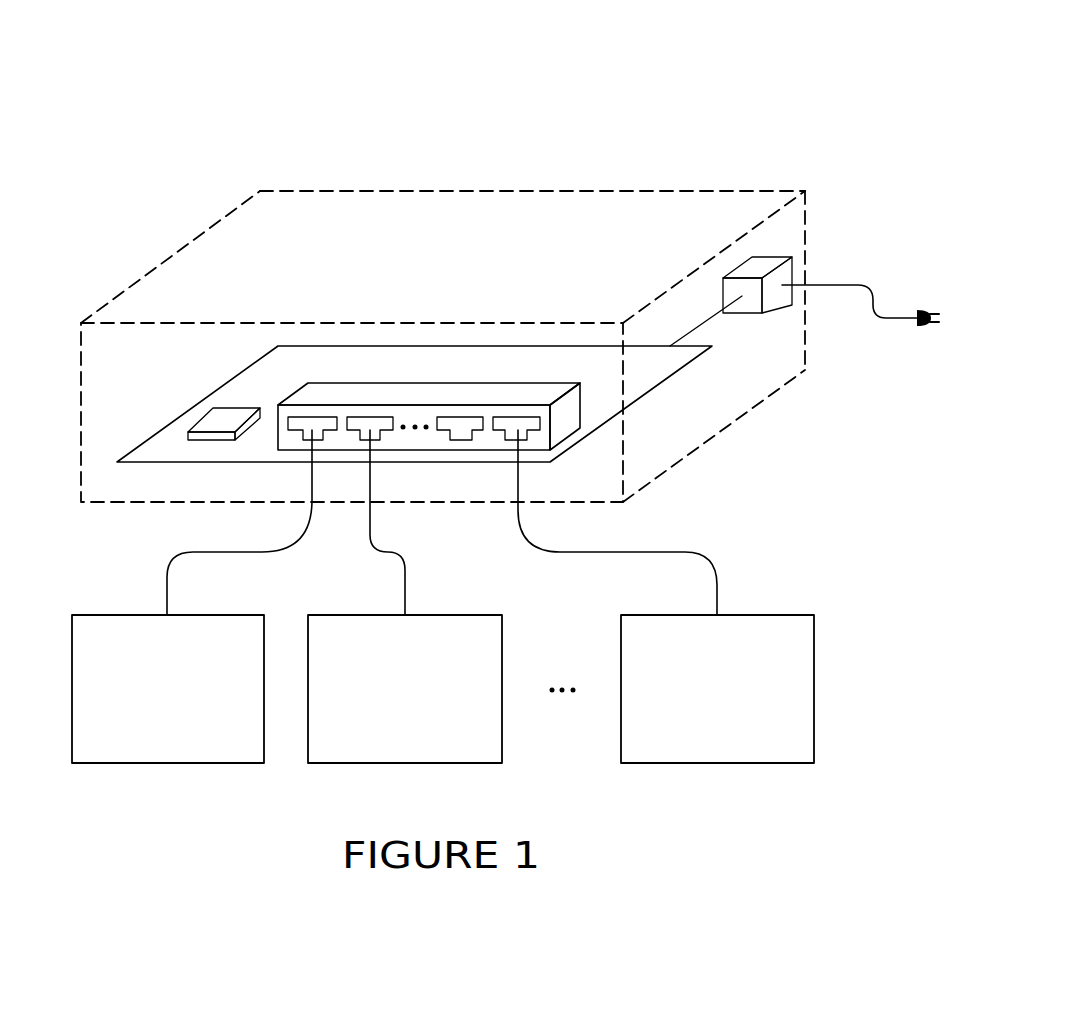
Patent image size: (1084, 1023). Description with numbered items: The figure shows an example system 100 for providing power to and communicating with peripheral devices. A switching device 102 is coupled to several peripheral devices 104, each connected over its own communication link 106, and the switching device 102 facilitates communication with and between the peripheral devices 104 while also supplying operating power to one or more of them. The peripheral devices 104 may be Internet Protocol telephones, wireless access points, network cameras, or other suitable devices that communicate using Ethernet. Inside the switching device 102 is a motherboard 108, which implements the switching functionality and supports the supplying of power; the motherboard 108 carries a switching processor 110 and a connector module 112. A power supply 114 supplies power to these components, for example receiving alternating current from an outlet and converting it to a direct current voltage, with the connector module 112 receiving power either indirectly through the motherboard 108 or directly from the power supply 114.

The system 100 is at (801, 62).
The switching device 102 is at (550, 191).
The peripheral devices 104 is at (187, 763).
The communication link 106 is at (167, 590).
The motherboard 108 is at (188, 408).
The switching processor 110 is at (220, 407).
The connector module 112 is at (413, 383).
The power supply 114 is at (750, 313).